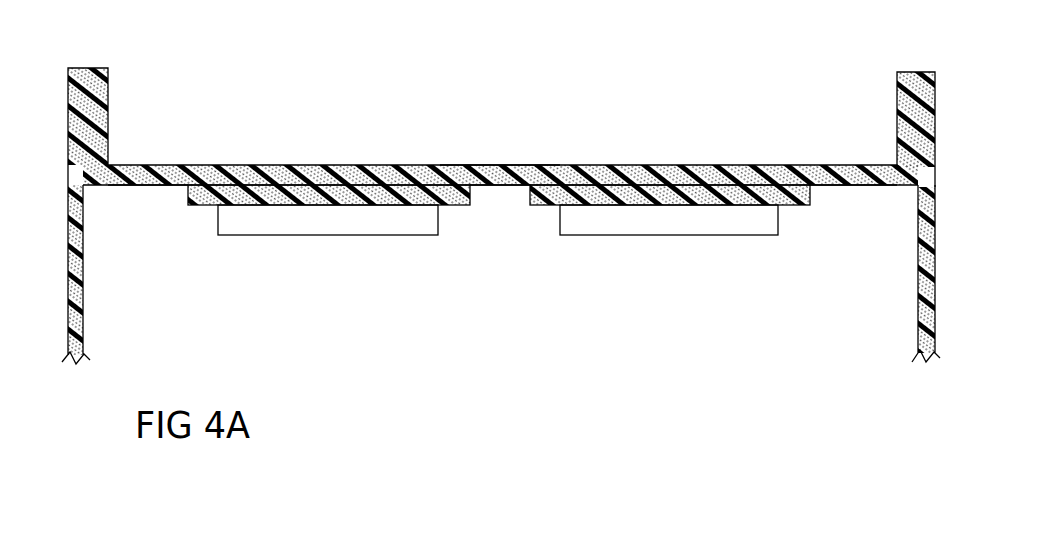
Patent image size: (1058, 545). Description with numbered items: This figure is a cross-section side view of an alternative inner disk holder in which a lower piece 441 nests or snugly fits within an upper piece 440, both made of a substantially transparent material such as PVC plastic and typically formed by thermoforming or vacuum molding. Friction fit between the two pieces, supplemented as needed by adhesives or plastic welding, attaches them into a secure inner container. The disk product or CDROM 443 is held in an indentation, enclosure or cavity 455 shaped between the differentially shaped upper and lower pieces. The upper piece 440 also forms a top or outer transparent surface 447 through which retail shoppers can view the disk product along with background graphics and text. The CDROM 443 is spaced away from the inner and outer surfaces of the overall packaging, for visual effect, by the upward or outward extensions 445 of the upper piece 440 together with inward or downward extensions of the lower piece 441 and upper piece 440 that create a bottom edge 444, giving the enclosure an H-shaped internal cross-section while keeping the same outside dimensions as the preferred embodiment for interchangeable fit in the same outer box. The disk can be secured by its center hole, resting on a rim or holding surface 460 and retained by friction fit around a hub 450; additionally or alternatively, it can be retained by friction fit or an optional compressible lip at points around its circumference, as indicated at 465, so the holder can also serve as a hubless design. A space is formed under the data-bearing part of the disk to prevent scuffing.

The upper piece 440 is at (110, 123).
The lower piece 441 is at (83, 316).
The CDROM 443 is at (690, 205).
The bottom edge 444 is at (918, 320).
The upward or outward extensions 445 is at (88, 68).
The top or outer transparent surface 447 is at (487, 165).
The hub 450 is at (507, 186).
The cavity 455 is at (326, 235).
The rim or holding surface 460 is at (452, 206).
The compressible lip 465 is at (181, 190).